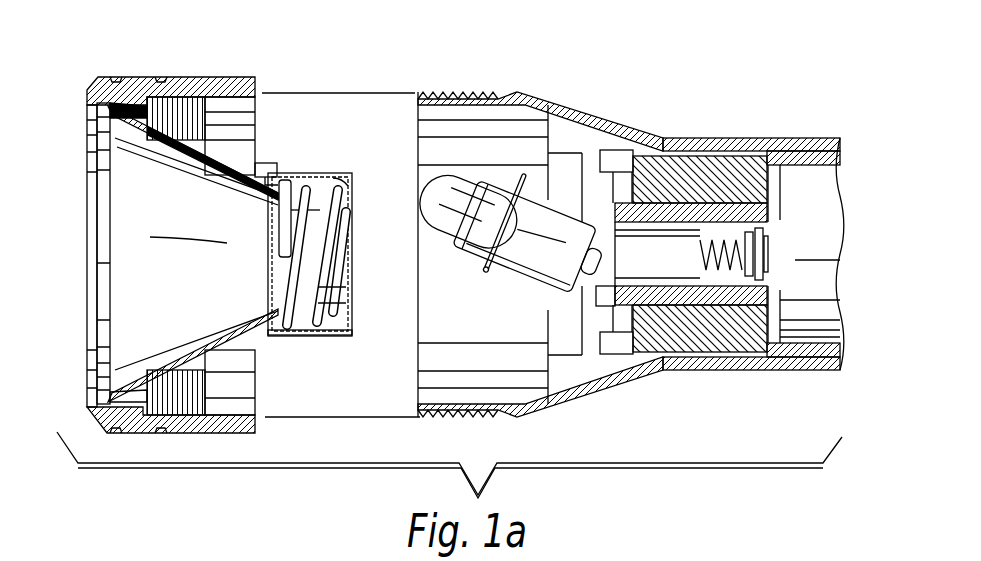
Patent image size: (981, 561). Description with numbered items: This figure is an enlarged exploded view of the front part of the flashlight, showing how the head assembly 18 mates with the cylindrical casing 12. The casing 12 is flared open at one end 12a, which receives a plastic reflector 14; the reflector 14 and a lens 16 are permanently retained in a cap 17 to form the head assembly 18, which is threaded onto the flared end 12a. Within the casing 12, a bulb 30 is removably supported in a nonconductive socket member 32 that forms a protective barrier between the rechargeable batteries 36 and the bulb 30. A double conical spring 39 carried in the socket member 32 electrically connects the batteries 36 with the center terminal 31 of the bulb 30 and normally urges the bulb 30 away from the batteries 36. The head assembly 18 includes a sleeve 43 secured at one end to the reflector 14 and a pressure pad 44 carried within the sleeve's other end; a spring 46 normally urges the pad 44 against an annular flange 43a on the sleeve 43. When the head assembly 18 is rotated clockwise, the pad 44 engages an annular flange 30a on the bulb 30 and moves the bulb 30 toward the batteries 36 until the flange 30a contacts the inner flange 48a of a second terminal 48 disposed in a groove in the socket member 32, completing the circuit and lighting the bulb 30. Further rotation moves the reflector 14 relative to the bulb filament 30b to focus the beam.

The cylindrical casing 12 is at (777, 138).
The flared end 12a is at (513, 90).
The reflector 14 is at (173, 132).
The lens 16 is at (100, 262).
The cap 17 is at (133, 76).
The head assembly 18 is at (186, 70).
The bulb 30 is at (438, 170).
The annular flange 30a is at (486, 269).
The bulb filament 30b is at (440, 228).
The center terminal 31 is at (604, 264).
The socket member 32 is at (687, 182).
The rechargeable batteries 36 is at (787, 292).
The double conical spring 39 is at (763, 253).
The sleeve 43 is at (310, 176).
The annular flange 43a is at (350, 336).
The pressure pad 44 is at (352, 316).
The spring 46 is at (293, 182).
The second terminal 48 is at (600, 155).
The inner flange 48a is at (620, 300).